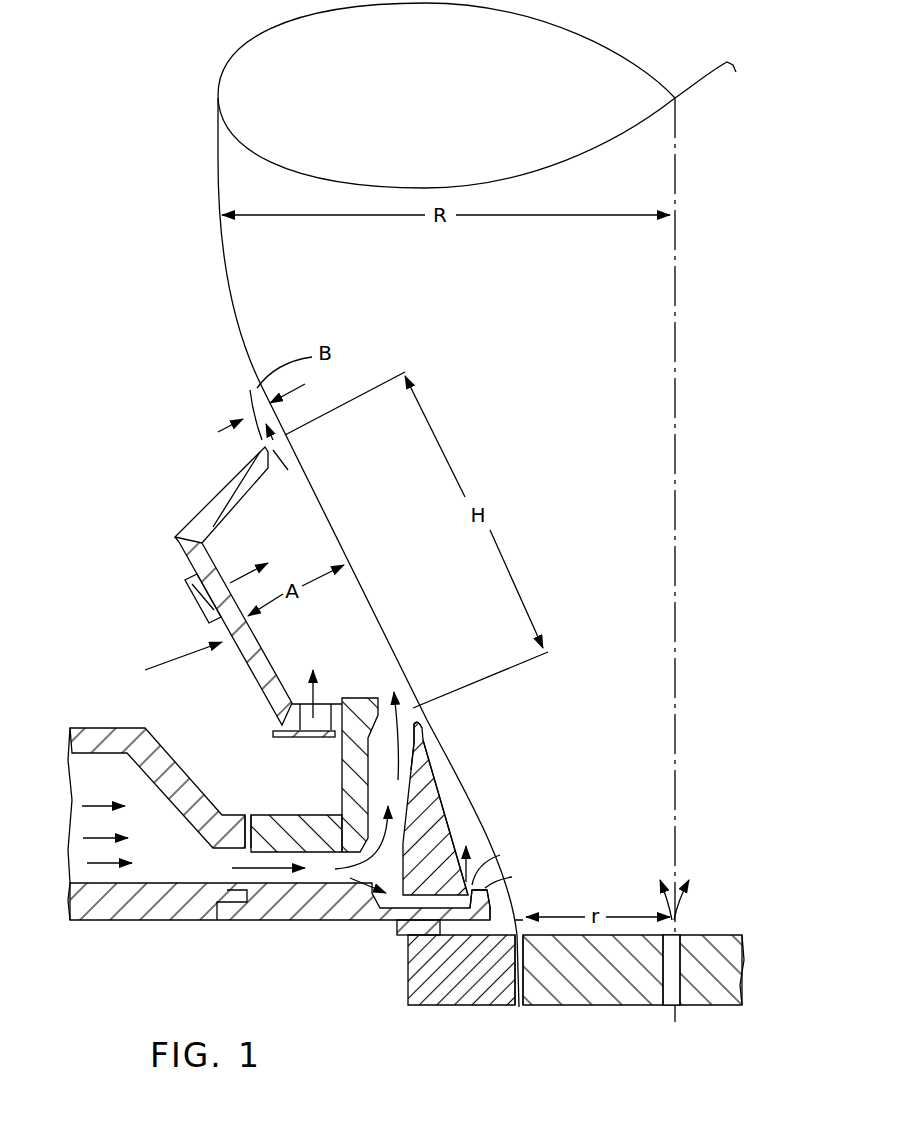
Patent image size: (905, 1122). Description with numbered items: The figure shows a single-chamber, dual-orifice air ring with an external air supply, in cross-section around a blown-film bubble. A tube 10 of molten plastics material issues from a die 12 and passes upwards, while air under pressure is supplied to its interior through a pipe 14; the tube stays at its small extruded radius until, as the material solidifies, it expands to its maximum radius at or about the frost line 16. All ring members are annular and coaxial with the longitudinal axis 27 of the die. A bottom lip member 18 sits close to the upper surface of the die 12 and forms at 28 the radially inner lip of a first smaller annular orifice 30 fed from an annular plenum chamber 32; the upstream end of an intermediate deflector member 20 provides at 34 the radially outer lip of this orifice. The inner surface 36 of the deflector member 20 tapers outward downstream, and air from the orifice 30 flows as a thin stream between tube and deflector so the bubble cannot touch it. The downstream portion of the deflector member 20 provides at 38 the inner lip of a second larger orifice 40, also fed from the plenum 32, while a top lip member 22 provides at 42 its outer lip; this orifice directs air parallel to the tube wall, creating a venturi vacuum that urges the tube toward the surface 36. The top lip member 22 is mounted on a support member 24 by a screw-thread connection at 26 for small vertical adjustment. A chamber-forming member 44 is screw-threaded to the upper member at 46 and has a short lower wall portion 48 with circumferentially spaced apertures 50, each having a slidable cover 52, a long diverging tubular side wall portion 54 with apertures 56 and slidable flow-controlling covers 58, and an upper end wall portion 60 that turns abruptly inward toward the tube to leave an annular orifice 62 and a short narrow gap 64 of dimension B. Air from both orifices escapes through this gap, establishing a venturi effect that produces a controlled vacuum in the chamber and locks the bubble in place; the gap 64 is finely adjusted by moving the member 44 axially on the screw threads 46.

The tube 10 is at (360, 590).
The die 12 is at (430, 972).
The pipe 14 is at (678, 912).
The frost line 16 is at (653, 125).
The bottom lip member 18 is at (284, 906).
The intermediate deflector member 20 is at (437, 810).
The top lip member 22 is at (345, 792).
The support member 24 is at (183, 781).
The screw-thread connection 26 is at (248, 822).
The longitudinal axis 27 is at (674, 707).
The radially inner lip of first orifice 28 is at (486, 888).
The first annular orifice 30 is at (472, 880).
The annular plenum chamber 32 is at (157, 848).
The radially outer lip of first orifice 34 is at (490, 906).
The inner surface of deflector member 36 is at (450, 834).
The radially inner lip of second orifice 38 is at (415, 718).
The second annular orifice 40 is at (405, 707).
The radially outer lip of second orifice 42 is at (384, 703).
The chamber-forming member 44 is at (169, 666).
The screw threads 46 is at (343, 745).
The lower wall portion 48 is at (334, 702).
The apertures 50 is at (302, 702).
The slidable cover 52 is at (290, 739).
The tubular side wall portion 54 is at (250, 664).
The apertures 56 is at (222, 606).
The slidable flow-controlling cover 58 is at (193, 588).
The upper end wall portion 60 is at (197, 516).
The annular orifice 62 is at (265, 447).
The gap 64 is at (290, 456).